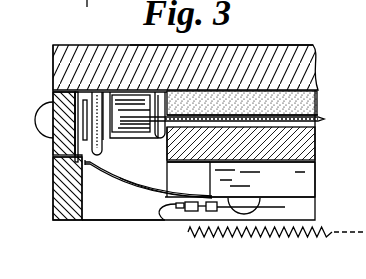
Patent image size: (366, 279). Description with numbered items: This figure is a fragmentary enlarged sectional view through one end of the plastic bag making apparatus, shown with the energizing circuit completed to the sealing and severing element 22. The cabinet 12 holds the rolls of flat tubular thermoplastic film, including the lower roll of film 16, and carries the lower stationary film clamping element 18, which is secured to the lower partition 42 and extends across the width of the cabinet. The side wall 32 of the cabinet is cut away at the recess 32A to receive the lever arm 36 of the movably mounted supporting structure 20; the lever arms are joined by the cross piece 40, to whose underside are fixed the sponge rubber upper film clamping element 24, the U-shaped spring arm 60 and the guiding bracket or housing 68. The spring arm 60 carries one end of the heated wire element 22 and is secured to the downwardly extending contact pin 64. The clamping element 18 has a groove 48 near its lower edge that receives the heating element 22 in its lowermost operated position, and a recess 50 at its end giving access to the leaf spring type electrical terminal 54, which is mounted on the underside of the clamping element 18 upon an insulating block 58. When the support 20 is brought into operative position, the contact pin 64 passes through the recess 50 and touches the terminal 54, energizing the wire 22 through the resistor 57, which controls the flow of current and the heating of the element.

The cabinet 12 is at (53, 220).
The lower roll of flat tubular thermoplastic film 16 is at (320, 119).
The lower stationary film clamping element 18 is at (316, 140).
The movably mounted supporting structure 20 is at (53, 62).
The heated wire type sealing and severing element 22 is at (317, 108).
The upper film clamping element 24 is at (316, 100).
The side wall 32 is at (57, 180).
The cut away recess of side wall 32A is at (63, 157).
The lever arm 36 is at (62, 98).
The cross piece 40 is at (297, 46).
The lower partition 42 is at (102, 210).
The groove 48 is at (184, 128).
The recess 50 is at (165, 143).
The leaf spring type electrical terminal 54 is at (147, 193).
The resistor 57 is at (248, 240).
The insulating block 58 is at (303, 178).
The spring arm 60 is at (142, 110).
The contact pin 64 is at (92, 140).
The U-shaped bracket or housing 68 is at (123, 177).